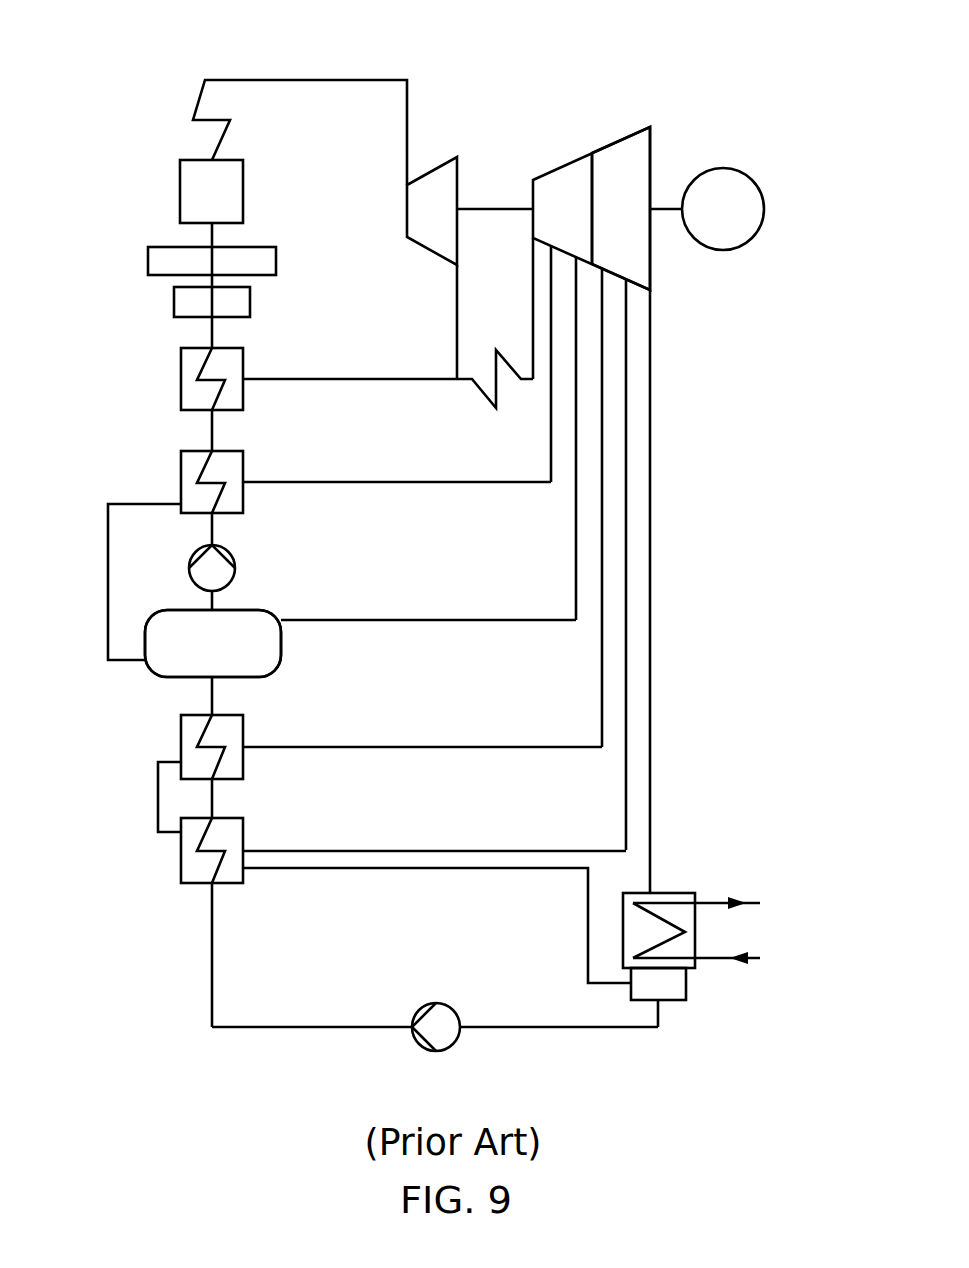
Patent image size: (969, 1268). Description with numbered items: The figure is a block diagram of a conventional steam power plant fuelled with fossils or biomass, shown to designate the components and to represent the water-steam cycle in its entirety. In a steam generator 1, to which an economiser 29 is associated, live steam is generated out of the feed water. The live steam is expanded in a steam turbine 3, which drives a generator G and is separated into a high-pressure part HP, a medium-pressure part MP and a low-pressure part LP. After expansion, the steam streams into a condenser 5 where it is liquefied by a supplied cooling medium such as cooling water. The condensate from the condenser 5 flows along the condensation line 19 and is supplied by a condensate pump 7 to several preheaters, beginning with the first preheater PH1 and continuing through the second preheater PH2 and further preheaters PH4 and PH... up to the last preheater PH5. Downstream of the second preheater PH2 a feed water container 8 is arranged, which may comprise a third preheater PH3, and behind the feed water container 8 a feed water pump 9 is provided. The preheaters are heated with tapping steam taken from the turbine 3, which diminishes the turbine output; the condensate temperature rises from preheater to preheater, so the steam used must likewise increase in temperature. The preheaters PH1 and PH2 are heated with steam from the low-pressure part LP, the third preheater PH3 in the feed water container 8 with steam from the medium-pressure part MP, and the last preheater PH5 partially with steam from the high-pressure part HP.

The steam turbine 3 is at (537, 99).
The steam generator 1 is at (180, 191).
The economiser 29 is at (148, 262).
The further preheater PH... is at (250, 302).
The fifth preheater PH5 is at (243, 357).
The fourth preheater PH4 is at (243, 460).
The feed water pump 9 is at (235, 568).
The third preheater PH3 is at (270, 648).
The feed water container 8 is at (152, 672).
The second preheater PH2 is at (171, 747).
The first preheater PH1 is at (171, 850).
The high-pressure part HP is at (447, 156).
The medium-pressure part MP is at (562, 160).
The low-pressure part LP is at (614, 135).
The generator G is at (723, 209).
The condenser 5 is at (678, 891).
The condensate pump 7 is at (414, 1045).
The condensation line 19 is at (538, 1030).